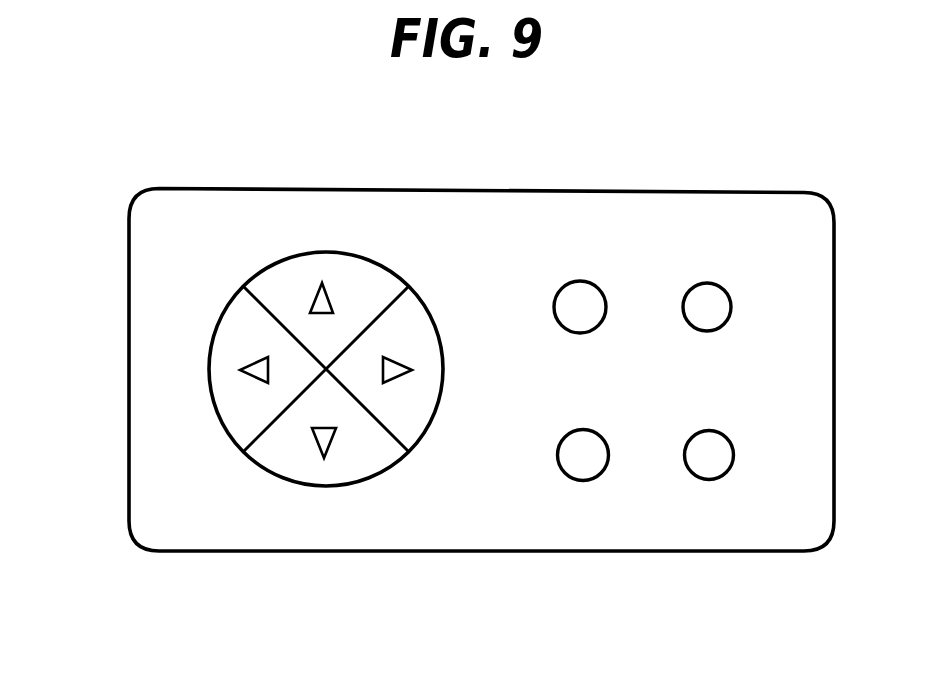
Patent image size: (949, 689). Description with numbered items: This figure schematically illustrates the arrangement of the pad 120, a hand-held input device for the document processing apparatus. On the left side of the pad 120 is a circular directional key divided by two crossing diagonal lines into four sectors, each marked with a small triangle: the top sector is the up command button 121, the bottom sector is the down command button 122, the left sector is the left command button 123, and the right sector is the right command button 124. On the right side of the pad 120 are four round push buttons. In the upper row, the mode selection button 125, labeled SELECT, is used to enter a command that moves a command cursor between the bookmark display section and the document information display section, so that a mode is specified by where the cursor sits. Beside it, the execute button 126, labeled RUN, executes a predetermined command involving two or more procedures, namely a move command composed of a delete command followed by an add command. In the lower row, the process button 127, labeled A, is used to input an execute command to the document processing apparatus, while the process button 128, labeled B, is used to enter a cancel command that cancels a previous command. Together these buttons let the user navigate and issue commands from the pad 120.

The pad 120 is at (241, 189).
The up command button 121 is at (353, 278).
The down command button 122 is at (308, 465).
The left command button 123 is at (245, 403).
The right command button 124 is at (407, 417).
The mode selection button 125 is at (568, 307).
The execute button 126 is at (710, 307).
The process button 127 is at (713, 467).
The process button 128 is at (588, 465).